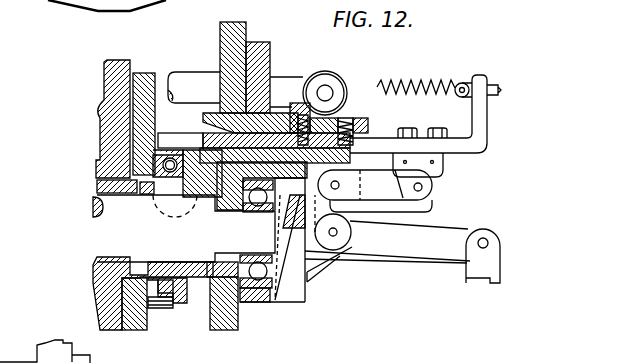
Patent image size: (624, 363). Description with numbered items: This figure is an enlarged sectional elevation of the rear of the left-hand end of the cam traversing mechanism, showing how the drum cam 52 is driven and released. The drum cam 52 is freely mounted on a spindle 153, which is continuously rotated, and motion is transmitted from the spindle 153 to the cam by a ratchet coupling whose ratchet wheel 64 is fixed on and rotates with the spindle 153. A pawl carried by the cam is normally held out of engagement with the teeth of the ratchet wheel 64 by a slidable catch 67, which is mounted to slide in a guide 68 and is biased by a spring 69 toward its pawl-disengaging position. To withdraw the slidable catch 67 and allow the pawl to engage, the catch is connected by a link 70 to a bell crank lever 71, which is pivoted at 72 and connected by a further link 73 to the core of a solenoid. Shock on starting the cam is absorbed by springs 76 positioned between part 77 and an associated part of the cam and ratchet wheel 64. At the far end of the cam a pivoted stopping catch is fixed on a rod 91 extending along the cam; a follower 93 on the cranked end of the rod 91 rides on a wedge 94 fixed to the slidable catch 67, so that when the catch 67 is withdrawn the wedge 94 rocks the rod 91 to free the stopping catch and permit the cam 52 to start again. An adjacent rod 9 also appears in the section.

The rod 9 is at (185, 86).
The drum cam 52 is at (108, 62).
The ratchet wheel 64 is at (155, 308).
The slidable catch 67 is at (460, 147).
The guide 68 is at (247, 150).
The spring 69 is at (400, 82).
The link 70 is at (375, 183).
The bell crank lever 71 is at (418, 242).
The pivot 72 is at (336, 245).
The link 73 is at (482, 262).
The springs 76 is at (172, 165).
The part 77 is at (177, 293).
The rod 91 is at (4, 356).
The follower 93 is at (331, 73).
The wedge 94 is at (352, 133).
The spindle 153 is at (125, 230).